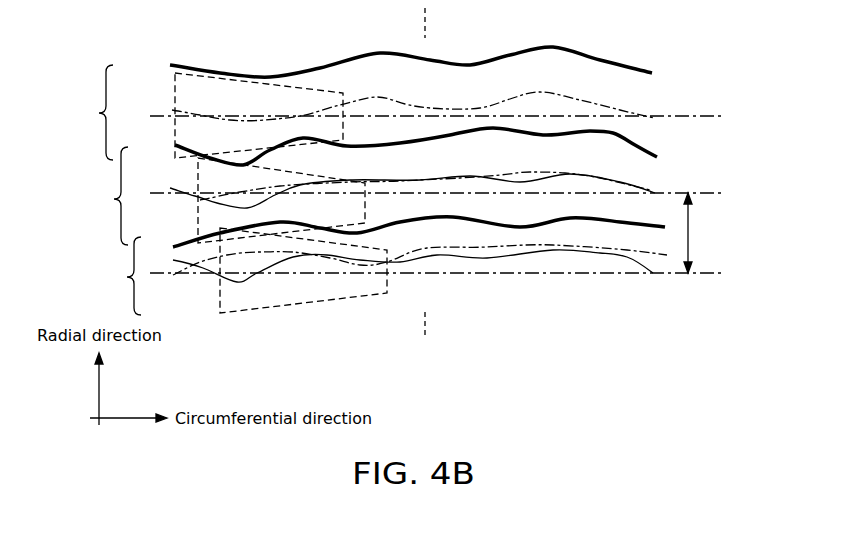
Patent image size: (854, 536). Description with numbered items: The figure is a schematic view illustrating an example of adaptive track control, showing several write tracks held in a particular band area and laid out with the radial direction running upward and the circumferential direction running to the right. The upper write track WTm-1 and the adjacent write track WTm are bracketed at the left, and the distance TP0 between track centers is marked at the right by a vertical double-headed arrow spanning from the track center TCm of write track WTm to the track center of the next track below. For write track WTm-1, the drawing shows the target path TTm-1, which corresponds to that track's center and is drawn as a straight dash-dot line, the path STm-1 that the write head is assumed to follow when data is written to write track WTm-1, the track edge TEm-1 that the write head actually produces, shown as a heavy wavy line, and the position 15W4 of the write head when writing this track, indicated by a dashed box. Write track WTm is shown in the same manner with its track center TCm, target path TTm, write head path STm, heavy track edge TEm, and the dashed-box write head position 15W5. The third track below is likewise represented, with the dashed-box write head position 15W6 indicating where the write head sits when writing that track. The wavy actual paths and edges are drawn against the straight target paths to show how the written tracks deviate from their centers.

The position of the write head 15W4 is at (176, 93).
The position of the write head 15W5 is at (198, 218).
The position of the write head 15W6 is at (220, 302).
The write track WTm-1 is at (73, 112).
The write track WTm is at (94, 196).
The track edge TEm-1 is at (601, 58).
The path of the write head STm-1 is at (538, 96).
The target path TTm-1 is at (656, 112).
The track edge TEm is at (650, 142).
The path of the write head STm is at (489, 176).
The target path TTm is at (554, 173).
The track center TCm is at (665, 192).
The distance between track centers TP0 is at (706, 233).